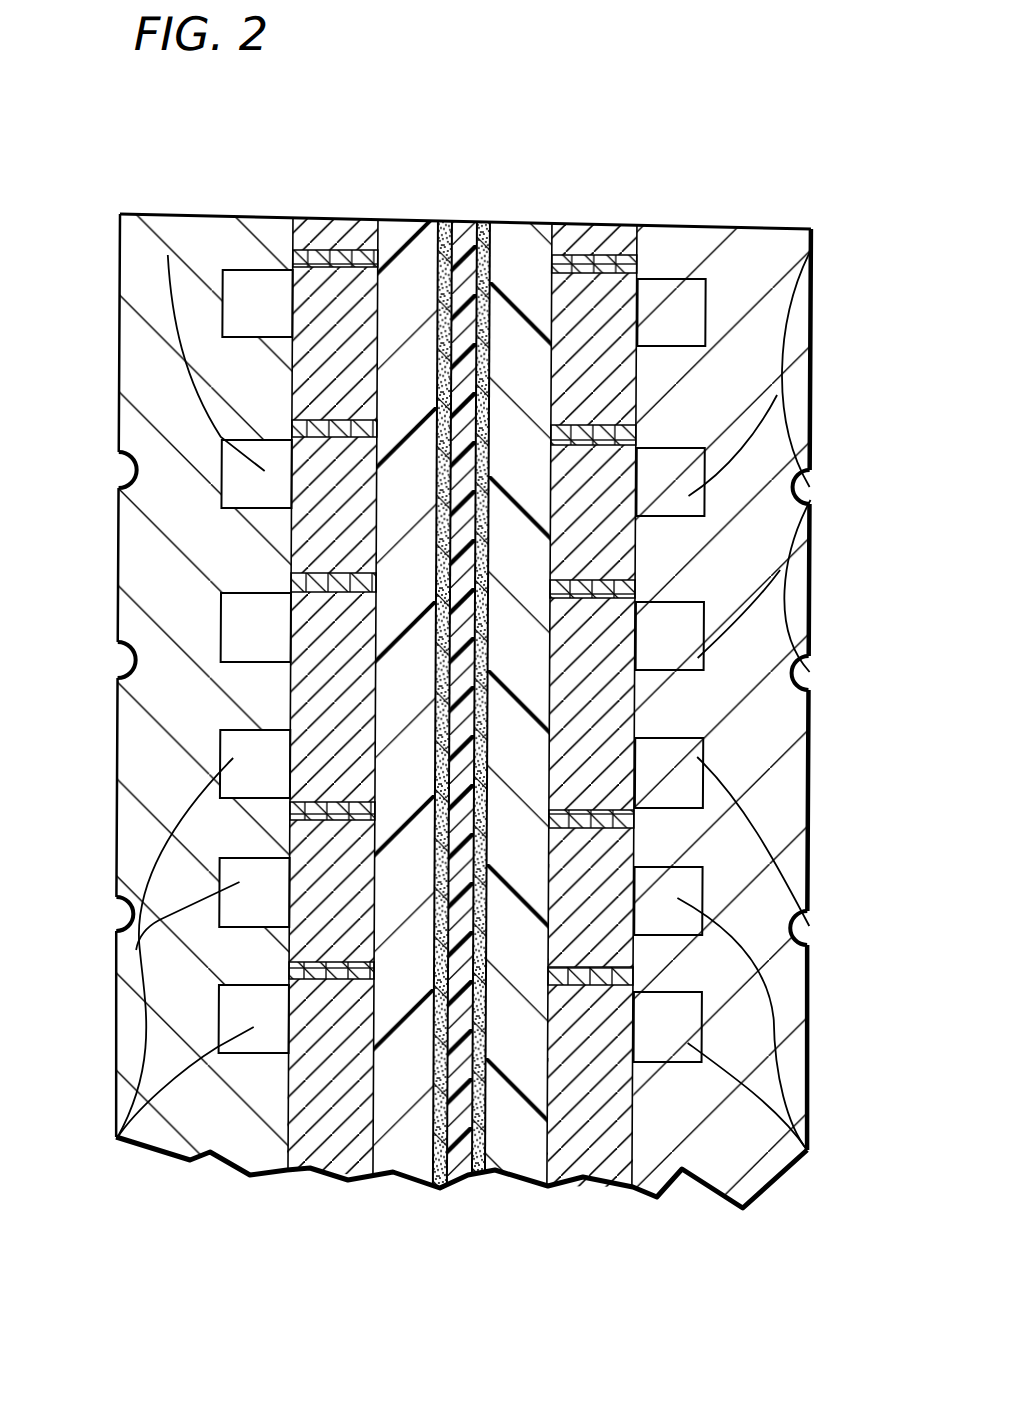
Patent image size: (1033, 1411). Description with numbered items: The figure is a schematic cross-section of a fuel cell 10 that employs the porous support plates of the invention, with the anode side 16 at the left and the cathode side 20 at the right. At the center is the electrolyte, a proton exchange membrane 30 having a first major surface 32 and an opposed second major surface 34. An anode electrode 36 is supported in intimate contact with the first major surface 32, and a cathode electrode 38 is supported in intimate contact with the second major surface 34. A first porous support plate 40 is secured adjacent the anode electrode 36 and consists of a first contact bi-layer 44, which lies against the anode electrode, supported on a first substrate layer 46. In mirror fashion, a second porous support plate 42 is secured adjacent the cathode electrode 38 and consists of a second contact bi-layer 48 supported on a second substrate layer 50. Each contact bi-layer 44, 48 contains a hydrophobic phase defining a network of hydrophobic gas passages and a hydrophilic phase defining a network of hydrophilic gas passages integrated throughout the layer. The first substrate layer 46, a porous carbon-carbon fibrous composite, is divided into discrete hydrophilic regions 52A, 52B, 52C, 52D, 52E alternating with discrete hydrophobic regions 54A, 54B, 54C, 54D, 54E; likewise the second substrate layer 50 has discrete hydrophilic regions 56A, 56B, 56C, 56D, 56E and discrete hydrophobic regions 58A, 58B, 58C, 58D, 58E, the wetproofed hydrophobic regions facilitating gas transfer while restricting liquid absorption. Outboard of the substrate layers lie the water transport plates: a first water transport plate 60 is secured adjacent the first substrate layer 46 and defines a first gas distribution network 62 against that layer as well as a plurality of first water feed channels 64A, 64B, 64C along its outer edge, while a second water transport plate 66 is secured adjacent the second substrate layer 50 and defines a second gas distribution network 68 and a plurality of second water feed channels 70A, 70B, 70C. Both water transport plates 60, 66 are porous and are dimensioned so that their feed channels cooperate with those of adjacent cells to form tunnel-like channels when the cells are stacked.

The fuel cell 10 is at (788, 146).
The anode side 16 is at (150, 762).
The cathode side 20 is at (766, 782).
The proton exchange membrane 30 is at (468, 250).
The first major surface 32 is at (460, 240).
The second major surface 34 is at (478, 240).
The anode electrode 36 is at (446, 232).
The cathode electrode 38 is at (530, 237).
The first porous support plate 40 is at (300, 680).
The second porous support plate 42 is at (623, 665).
The first contact bi-layer 44 is at (402, 240).
The first substrate layer 46 is at (270, 638).
The second contact bi-layer 48 is at (634, 628).
The second substrate layer 50 is at (612, 238).
The hydrophilic region 52A is at (292, 967).
The hydrophilic region 52B is at (296, 819).
The hydrophilic region 52C is at (295, 581).
The hydrophilic region 52D is at (329, 421).
The hydrophilic region 52E is at (290, 218).
The hydrophobic region 54A is at (360, 1093).
The hydrophobic region 54B is at (359, 901).
The hydrophobic region 54C is at (358, 709).
The hydrophobic region 54D is at (357, 513).
The hydrophobic region 54E is at (356, 344).
The hydrophilic region 56A is at (641, 977).
The hydrophilic region 56B is at (640, 829).
The hydrophilic region 56C is at (635, 590).
The hydrophilic region 56D is at (633, 433).
The hydrophilic region 56E is at (650, 245).
The hydrophobic region 58A is at (625, 1096).
The hydrophobic region 58B is at (624, 904).
The hydrophobic region 58C is at (623, 711).
The hydrophobic region 58D is at (622, 516).
The hydrophobic region 58E is at (621, 346).
The first water transport plate 60 is at (151, 735).
The first gas distribution network 62 is at (260, 322).
The first water feed channel 64A is at (124, 915).
The first water feed channel 64B is at (122, 658).
The first water feed channel 64C is at (128, 480).
The second water transport plate 66 is at (783, 780).
The second gas distribution network 68 is at (700, 325).
The second water feed channel 70A is at (804, 932).
The second water feed channel 70B is at (803, 677).
The second water feed channel 70C is at (802, 490).